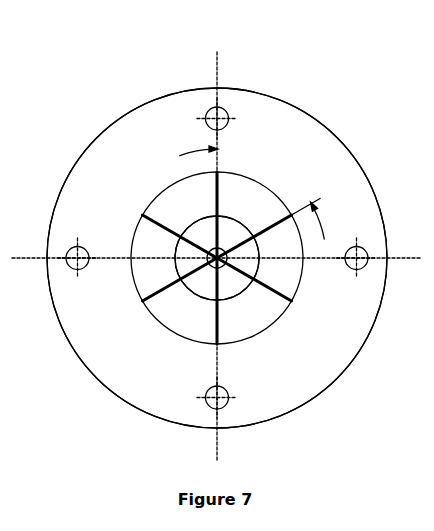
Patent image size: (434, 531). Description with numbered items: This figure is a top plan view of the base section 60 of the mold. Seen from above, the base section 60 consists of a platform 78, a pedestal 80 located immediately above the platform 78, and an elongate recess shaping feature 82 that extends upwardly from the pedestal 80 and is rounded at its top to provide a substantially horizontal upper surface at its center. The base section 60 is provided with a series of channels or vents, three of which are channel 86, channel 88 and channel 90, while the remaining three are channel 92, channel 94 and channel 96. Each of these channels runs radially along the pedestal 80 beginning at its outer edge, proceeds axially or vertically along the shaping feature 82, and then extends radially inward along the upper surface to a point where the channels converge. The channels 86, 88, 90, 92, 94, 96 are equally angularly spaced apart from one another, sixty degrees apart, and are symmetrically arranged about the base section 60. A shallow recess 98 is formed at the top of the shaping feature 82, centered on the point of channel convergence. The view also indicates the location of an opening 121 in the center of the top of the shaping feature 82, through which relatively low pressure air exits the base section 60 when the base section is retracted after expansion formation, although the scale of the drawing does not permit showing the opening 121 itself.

The base section 60 is at (356, 101).
The platform 78 is at (168, 93).
The pedestal 80 is at (165, 187).
The recess shaping feature 82 is at (245, 222).
The channel 86 is at (143, 300).
The channel 88 is at (220, 335).
The channel 90 is at (292, 300).
The channel 92 is at (298, 226).
The channel 94 is at (218, 172).
The channel 96 is at (160, 225).
The shallow recess 98 is at (242, 282).
The opening 121 is at (212, 272).